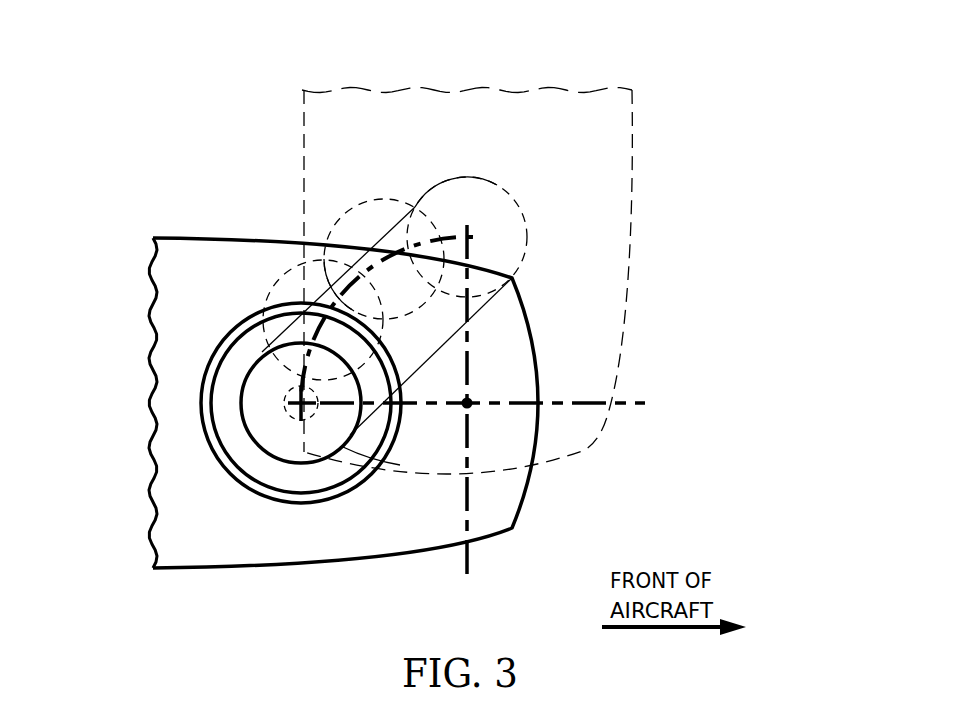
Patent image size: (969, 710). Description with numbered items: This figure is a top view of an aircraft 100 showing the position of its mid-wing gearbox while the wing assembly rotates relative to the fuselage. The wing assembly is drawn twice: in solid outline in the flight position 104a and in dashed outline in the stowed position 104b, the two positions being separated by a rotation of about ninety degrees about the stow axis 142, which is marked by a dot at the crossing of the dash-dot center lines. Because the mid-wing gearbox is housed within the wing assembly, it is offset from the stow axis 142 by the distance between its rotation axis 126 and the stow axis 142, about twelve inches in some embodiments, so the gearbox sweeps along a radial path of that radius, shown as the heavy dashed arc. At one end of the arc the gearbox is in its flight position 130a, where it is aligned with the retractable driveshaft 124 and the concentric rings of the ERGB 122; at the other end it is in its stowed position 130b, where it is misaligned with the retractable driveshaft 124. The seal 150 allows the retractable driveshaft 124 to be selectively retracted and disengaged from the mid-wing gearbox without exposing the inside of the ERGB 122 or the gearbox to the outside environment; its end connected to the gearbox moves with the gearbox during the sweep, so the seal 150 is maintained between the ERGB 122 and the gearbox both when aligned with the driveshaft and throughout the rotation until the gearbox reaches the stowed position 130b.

The aircraft 100 is at (182, 82).
The flight position 104a is at (146, 406).
The stowed position 104b is at (413, 80).
The ERGB 122 is at (255, 317).
The retractable driveshaft 124 is at (300, 420).
The rotation axis 126 is at (300, 400).
The flight position of the MWGB 130a is at (302, 462).
The stowed position of the MWGB 130b is at (440, 182).
The stow axis 142 is at (472, 408).
The seal 150 is at (490, 305).